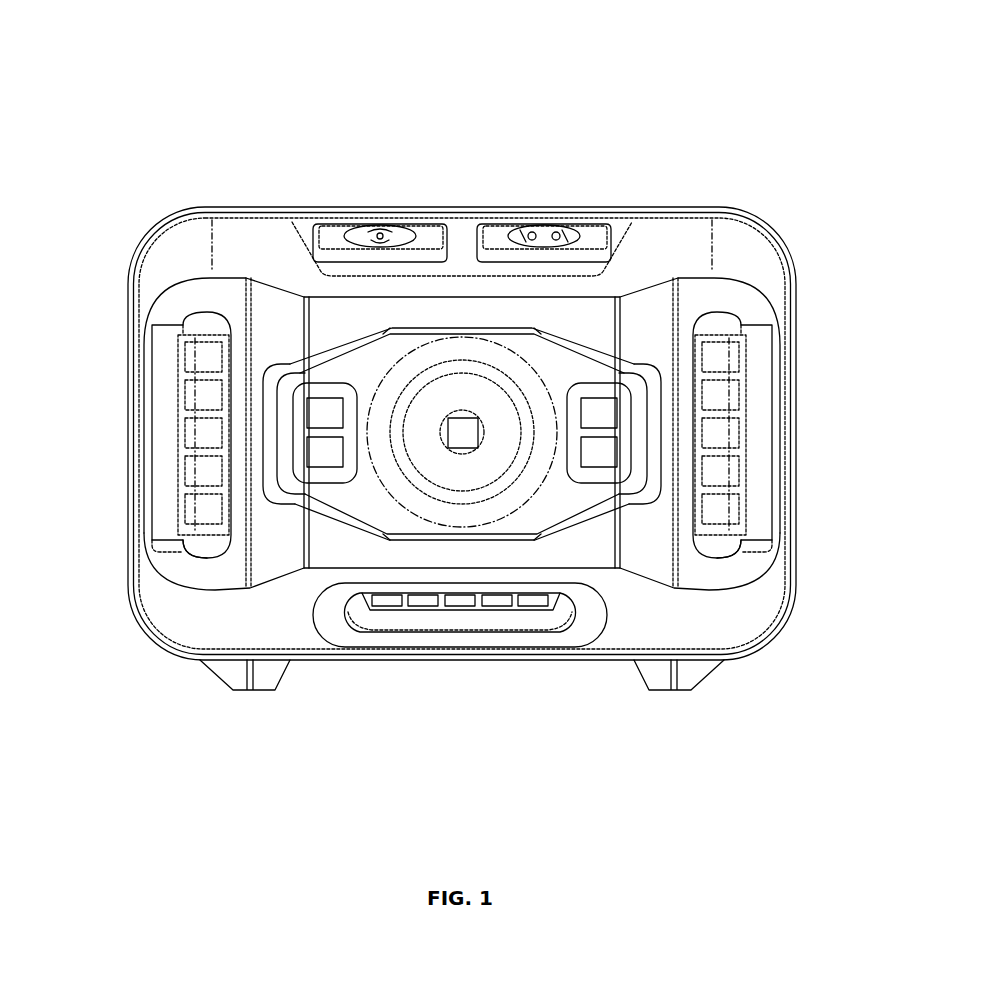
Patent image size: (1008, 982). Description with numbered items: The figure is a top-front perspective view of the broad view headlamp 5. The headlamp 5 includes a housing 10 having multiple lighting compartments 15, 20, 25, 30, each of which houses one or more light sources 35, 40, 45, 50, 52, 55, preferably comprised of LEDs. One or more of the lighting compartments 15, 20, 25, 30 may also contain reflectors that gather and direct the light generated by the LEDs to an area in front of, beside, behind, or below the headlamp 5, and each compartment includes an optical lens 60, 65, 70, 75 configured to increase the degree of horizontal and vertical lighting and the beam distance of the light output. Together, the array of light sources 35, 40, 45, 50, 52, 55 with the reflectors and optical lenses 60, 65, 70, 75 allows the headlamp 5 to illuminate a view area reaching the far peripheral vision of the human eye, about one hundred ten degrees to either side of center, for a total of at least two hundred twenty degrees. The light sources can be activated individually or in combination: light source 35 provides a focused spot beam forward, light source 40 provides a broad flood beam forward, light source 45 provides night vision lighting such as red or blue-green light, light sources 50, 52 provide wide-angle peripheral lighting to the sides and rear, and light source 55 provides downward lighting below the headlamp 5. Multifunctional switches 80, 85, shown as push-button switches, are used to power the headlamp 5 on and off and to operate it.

The headlamp 5 is at (225, 56).
The housing 10 is at (740, 258).
The lighting compartment 15 is at (568, 490).
The lighting compartment 20 is at (762, 376).
The lighting compartment 25 is at (160, 462).
The lighting compartment 30 is at (510, 622).
The light source 35 is at (461, 432).
The light source 40 is at (325, 462).
The light source 45 is at (323, 411).
The light source 50 is at (742, 458).
The light source 52 is at (178, 392).
The light source 55 is at (410, 609).
The optical lens 60 is at (352, 494).
The optical lens 65 is at (762, 522).
The optical lens 70 is at (162, 522).
The optical lens 75 is at (453, 622).
The multifunctional switch 80 is at (338, 235).
The multifunctional switch 85 is at (580, 235).